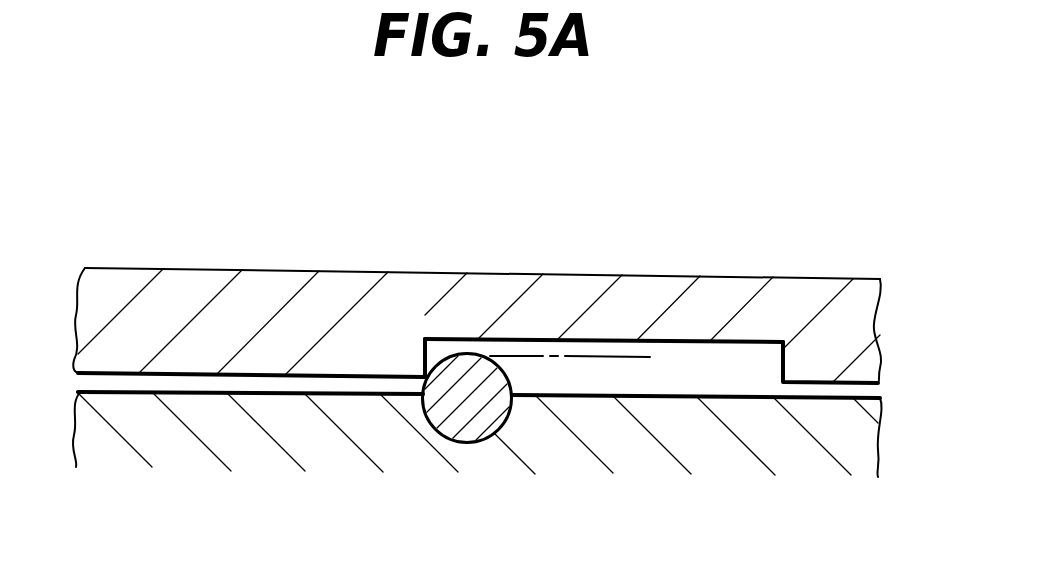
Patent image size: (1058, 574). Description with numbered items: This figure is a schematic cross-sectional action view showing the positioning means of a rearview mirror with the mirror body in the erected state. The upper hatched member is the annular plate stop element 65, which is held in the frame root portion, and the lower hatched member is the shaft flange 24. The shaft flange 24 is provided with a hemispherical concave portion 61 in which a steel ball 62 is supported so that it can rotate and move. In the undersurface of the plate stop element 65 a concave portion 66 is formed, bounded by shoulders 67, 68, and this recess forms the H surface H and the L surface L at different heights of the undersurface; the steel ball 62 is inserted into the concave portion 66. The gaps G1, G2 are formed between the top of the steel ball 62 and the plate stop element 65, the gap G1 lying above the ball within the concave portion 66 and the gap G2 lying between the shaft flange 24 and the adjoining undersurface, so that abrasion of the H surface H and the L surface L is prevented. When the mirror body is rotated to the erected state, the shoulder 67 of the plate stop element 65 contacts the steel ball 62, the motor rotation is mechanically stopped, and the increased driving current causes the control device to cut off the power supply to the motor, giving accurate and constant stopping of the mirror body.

The shaft flange 24 is at (148, 433).
The hemispherical concave portion 61 is at (472, 437).
The steel ball 62 is at (488, 432).
The plate stop element 65 is at (834, 280).
The concave portion 66 is at (696, 340).
The shoulder 67 is at (430, 343).
The shoulder 68 is at (782, 356).
The gap G1 is at (620, 397).
The gap G2 is at (269, 308).
The L surface L is at (720, 340).
The H surface H is at (843, 387).